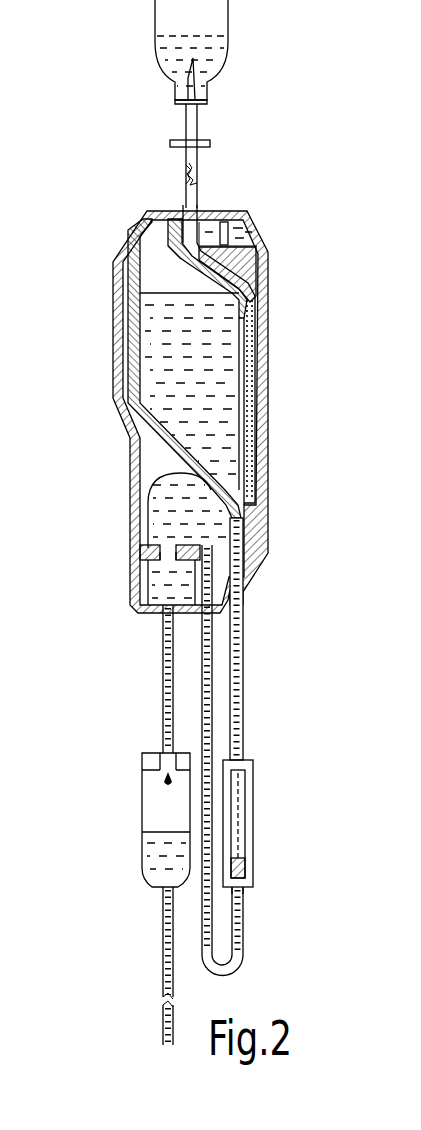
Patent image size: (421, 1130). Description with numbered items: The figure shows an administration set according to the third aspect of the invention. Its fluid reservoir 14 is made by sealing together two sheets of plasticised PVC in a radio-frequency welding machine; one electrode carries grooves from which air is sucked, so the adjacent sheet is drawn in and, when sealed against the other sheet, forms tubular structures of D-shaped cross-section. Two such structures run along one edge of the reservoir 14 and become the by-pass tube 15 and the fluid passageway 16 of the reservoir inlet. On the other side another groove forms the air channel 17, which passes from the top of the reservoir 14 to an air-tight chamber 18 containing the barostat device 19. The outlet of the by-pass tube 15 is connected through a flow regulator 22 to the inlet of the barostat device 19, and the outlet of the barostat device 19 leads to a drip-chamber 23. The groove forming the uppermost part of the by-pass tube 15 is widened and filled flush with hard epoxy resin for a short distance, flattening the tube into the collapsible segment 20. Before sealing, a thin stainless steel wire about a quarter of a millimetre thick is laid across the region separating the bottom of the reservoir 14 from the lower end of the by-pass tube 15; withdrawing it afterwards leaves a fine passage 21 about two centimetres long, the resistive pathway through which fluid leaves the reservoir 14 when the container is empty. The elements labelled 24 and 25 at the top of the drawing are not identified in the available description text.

The fluid reservoir 14 is at (195, 318).
The by-pass tube 15 is at (262, 356).
The fluid passageway 16 is at (255, 405).
The air channel 17 is at (127, 352).
The air-tight chamber 18 is at (140, 460).
The barostat device 19 is at (140, 517).
The collapsible segment 20 is at (250, 230).
The fine passage 21 is at (245, 522).
The flow regulator 22 is at (255, 808).
The drip-chamber 23 is at (163, 803).
The connecting tube 24 is at (190, 127).
The supply container 25 is at (236, 30).